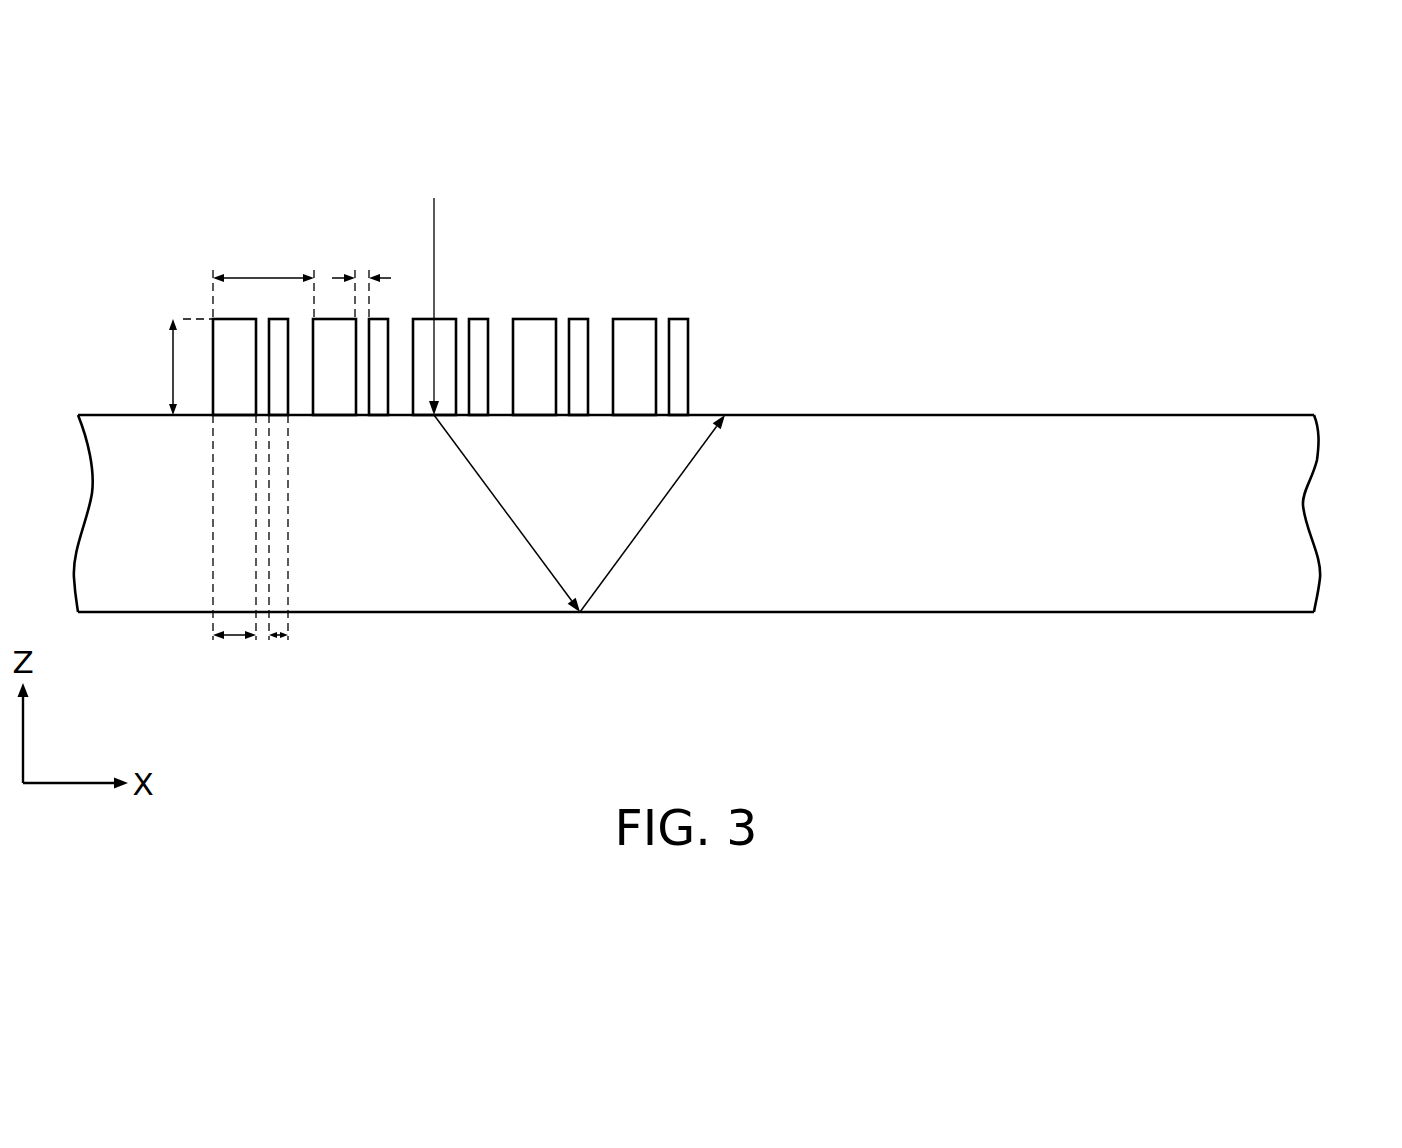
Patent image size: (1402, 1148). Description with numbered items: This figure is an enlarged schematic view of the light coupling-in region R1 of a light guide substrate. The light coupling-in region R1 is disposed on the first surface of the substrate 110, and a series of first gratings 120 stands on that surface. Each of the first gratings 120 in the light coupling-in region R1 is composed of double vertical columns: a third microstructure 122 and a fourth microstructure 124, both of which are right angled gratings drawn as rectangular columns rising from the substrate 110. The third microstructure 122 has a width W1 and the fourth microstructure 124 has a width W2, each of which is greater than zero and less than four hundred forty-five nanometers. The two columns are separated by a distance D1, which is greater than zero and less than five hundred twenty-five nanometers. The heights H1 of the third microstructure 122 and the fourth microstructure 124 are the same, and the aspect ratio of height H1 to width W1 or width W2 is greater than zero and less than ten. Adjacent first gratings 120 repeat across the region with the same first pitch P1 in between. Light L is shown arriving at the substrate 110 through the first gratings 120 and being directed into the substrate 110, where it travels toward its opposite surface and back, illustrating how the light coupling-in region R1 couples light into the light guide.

The substrate 110 is at (1273, 518).
The first grating 120 is at (450, 297).
The third microstructure 122 is at (525, 337).
The fourth microstructure 124 is at (490, 230).
The incident light L is at (434, 222).
The light coupling-in region R1 is at (702, 268).
The first pitch P1 is at (263, 276).
The distance D1 is at (361, 276).
The height H1 is at (174, 367).
The width W1 is at (234, 548).
The width W2 is at (279, 548).